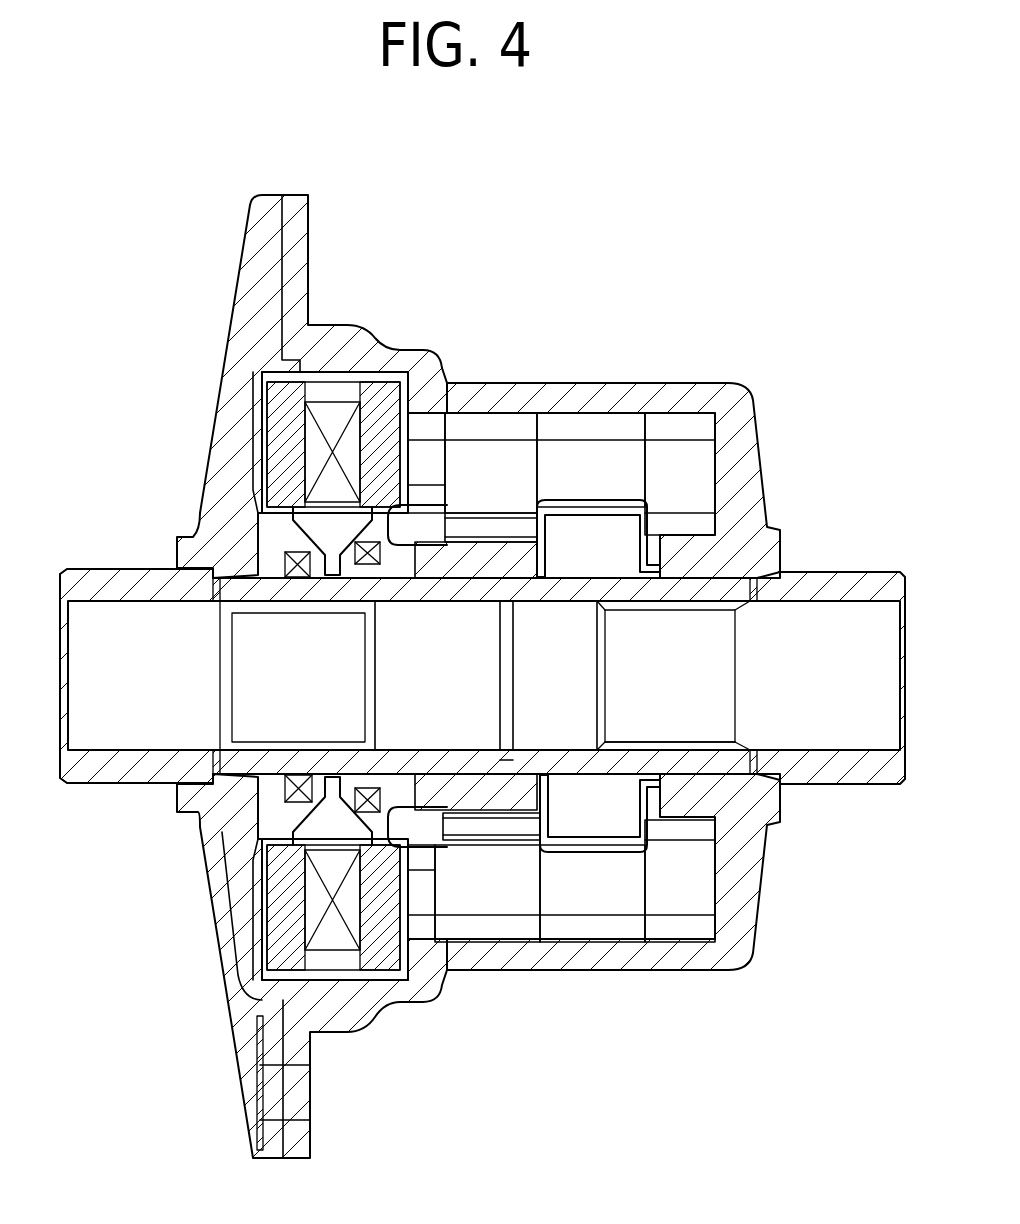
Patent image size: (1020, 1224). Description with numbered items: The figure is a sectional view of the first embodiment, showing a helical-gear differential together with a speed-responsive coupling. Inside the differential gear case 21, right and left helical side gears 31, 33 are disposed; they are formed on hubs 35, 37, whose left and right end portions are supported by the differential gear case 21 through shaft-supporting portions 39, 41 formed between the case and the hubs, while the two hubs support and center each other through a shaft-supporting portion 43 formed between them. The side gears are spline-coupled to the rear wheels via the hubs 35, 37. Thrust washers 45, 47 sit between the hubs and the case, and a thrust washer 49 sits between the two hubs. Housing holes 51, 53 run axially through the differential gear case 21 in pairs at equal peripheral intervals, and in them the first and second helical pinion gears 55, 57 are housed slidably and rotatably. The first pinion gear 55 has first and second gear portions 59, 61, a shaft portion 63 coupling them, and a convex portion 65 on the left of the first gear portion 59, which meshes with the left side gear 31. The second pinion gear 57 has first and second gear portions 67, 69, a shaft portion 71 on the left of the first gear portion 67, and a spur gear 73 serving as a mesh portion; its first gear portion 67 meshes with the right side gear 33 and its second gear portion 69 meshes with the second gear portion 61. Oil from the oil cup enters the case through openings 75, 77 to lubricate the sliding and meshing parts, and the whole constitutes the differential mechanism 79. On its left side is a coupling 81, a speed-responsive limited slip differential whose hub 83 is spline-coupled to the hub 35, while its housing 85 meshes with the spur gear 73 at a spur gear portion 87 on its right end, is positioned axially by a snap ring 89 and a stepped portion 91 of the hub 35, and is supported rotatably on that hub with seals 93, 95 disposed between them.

The differential gear case 21 is at (283, 195).
The left helical side gear 31 is at (482, 676).
The right helical side gear 33 is at (640, 602).
The hub 35 is at (418, 585).
The hub 37 is at (706, 601).
The shaft-supporting portion 39 is at (232, 772).
The shaft-supporting portion 41 is at (712, 772).
The shaft-supporting portion 43 is at (520, 780).
The thrust washer 45 is at (213, 612).
The thrust washer 47 is at (760, 605).
The thrust washer 49 is at (545, 560).
The housing hole 51 is at (580, 424).
The housing hole 53 is at (575, 930).
The first helical pinion gear 55 is at (730, 405).
The second helical pinion gear 57 is at (722, 950).
The first gear portion 59 is at (487, 430).
The second gear portion 61 is at (681, 430).
The shaft portion 63 is at (609, 489).
The convex portion 65 is at (425, 676).
The first gear portion 67 is at (590, 925).
The second gear portion 69 is at (665, 925).
The shaft portion 71 is at (487, 893).
The spur gear 73 is at (422, 933).
The opening 75 is at (222, 835).
The opening 77 is at (463, 957).
The differential mechanism 79 is at (560, 630).
The coupling 81 is at (275, 350).
The hub 83 is at (309, 676).
The housing 85 is at (365, 385).
The spur gear portion 87 is at (435, 545).
The snap ring 89 is at (280, 805).
The stepped portion 91 is at (343, 776).
The seal 93 is at (292, 562).
The seal 95 is at (340, 565).